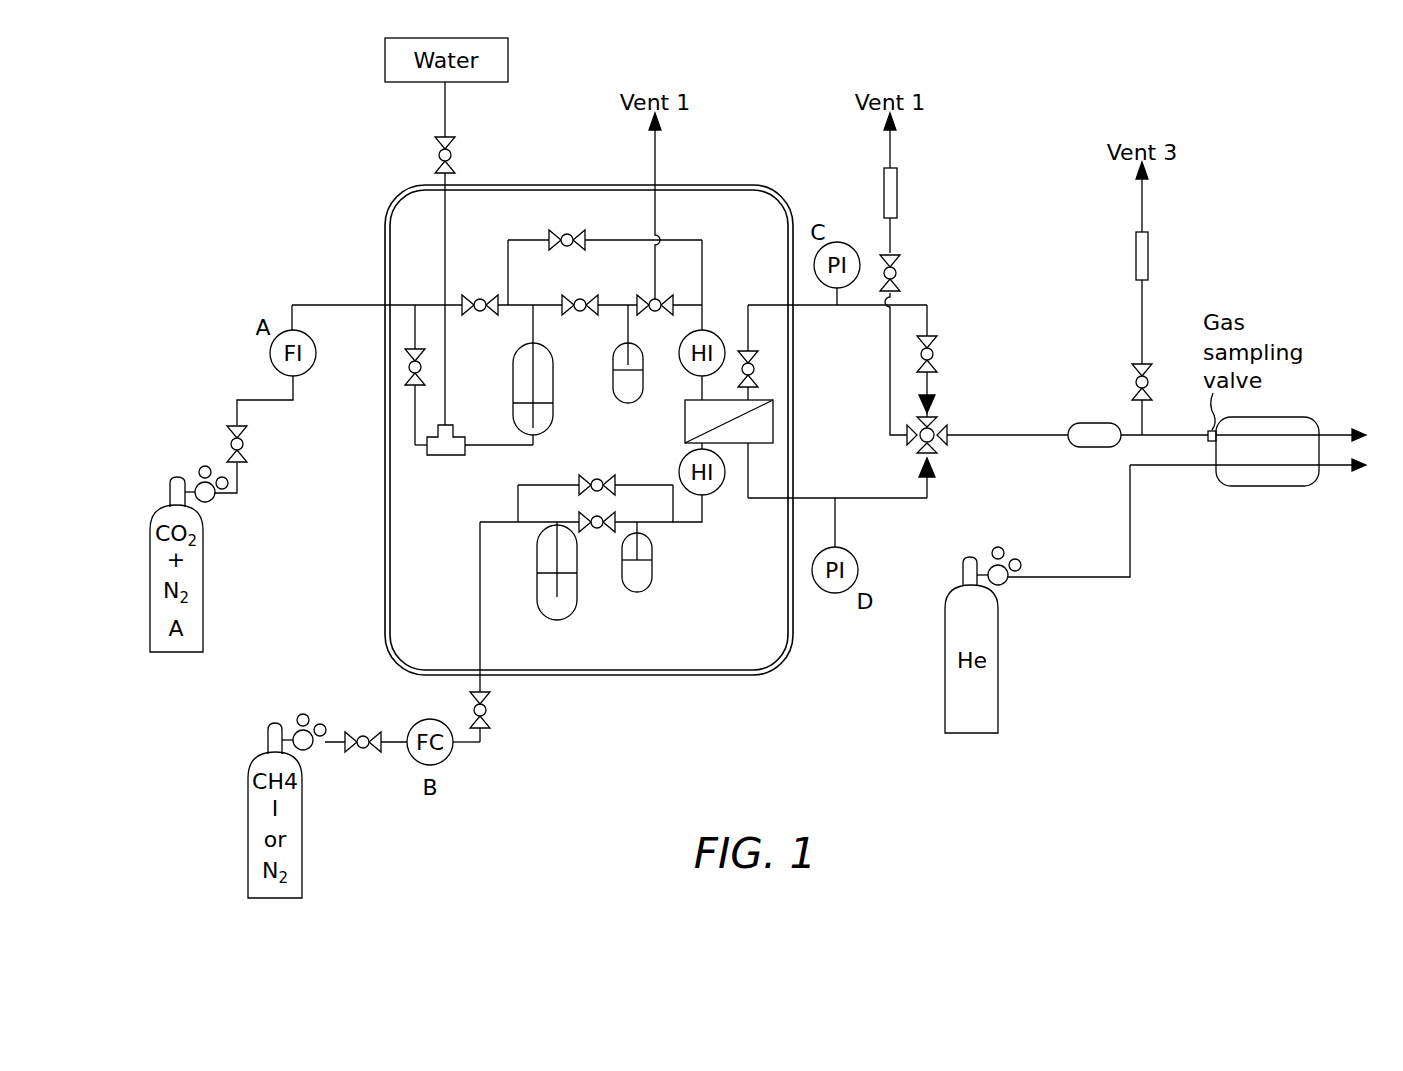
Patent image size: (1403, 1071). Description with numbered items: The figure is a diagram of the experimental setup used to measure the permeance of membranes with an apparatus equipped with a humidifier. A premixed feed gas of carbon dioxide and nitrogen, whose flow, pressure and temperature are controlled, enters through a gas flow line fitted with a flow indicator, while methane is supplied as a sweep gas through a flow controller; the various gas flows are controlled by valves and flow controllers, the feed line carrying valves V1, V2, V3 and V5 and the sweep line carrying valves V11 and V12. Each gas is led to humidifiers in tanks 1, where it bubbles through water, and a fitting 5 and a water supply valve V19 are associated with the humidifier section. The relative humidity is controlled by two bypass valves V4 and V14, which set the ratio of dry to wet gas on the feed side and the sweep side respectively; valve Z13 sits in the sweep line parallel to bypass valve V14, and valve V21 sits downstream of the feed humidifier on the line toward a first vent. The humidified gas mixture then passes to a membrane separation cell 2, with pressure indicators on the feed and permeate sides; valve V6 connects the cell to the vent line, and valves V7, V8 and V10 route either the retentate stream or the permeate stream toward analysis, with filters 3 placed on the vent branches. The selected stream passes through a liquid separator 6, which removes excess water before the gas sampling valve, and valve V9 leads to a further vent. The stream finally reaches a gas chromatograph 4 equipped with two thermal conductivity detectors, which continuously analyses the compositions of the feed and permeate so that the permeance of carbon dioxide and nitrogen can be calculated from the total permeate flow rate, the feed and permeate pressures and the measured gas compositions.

The tanks 1 is at (591, 462).
The membrane separation cell 2 is at (719, 421).
The filter 3 is at (1004, 224).
The gas chromatograph 4 is at (1248, 438).
The drain fitting 5 is at (480, 457).
The liquid separator 6 is at (1094, 451).
The valve V1 is at (254, 444).
The valve V2 is at (406, 367).
The valve V3 is at (480, 320).
The bypass valve V4 is at (567, 255).
The valve V5 is at (580, 320).
The valve V6 is at (762, 352).
The valve V7 is at (943, 361).
The multi-port valve V8 is at (938, 446).
The valve V9 is at (1125, 382).
The valve V10 is at (912, 273).
The valve V11 is at (362, 757).
The valve V12 is at (504, 710).
The bypass valve V14 is at (595, 486).
The valve V19 is at (469, 155).
The valve V21 is at (639, 292).
The valve Z13 is at (597, 538).